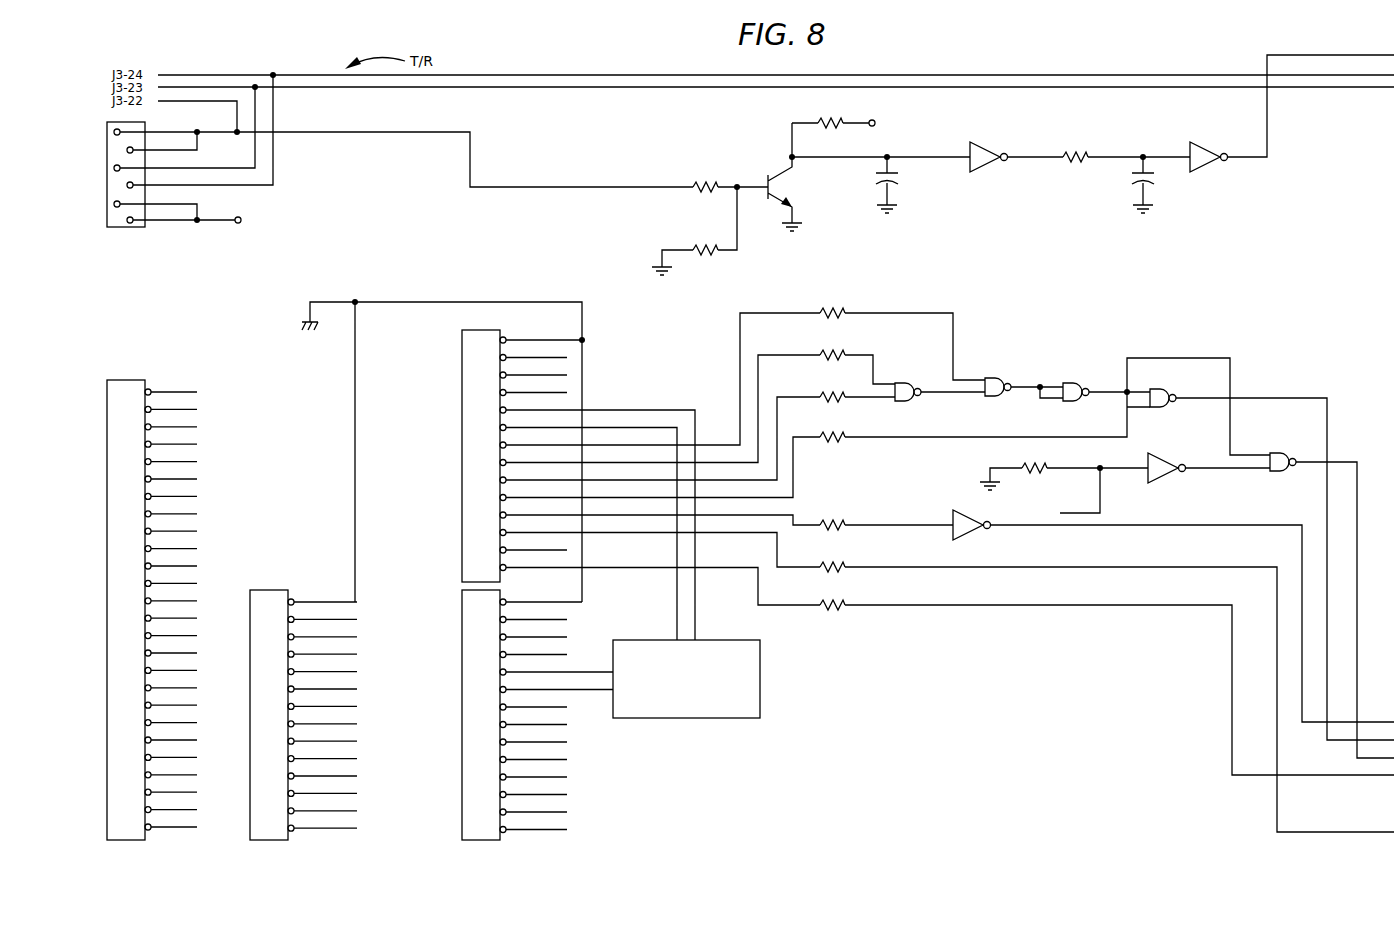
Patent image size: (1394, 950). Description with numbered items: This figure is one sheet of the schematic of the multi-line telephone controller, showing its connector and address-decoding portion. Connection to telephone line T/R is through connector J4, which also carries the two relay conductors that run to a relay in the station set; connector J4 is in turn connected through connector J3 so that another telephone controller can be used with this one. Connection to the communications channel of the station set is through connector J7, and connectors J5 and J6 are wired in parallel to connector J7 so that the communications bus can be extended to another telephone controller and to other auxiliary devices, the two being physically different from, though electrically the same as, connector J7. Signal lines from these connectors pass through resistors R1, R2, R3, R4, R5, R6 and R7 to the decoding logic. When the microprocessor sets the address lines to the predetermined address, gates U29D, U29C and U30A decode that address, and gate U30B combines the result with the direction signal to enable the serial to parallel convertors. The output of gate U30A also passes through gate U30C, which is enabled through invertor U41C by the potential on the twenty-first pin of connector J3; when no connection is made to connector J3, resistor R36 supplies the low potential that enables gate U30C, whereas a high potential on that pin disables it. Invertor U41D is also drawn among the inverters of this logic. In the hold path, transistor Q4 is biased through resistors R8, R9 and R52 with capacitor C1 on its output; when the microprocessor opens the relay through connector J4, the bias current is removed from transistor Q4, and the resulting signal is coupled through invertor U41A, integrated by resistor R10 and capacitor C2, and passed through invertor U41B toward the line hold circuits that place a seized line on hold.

The connector J3 is at (111, 405).
The connector J4 is at (111, 144).
The connector J5 is at (466, 354).
The connector J6 is at (466, 616).
The connector J7 is at (254, 616).
The transistor Q4 is at (813, 177).
The resistor R1 is at (902, 335).
The resistor R2 is at (1045, 410).
The resistor R3 is at (857, 359).
The resistor R4 is at (857, 395).
The resistor R5 is at (886, 517).
The resistor R6 is at (1107, 688).
The resistor R7 is at (1107, 679).
The resistor R8 is at (730, 186).
The resistor R9 is at (838, 122).
The resistor R10 is at (1126, 158).
The resistor R36 is at (1064, 482).
The resistor R52 is at (694, 233).
The capacitor C1 is at (898, 185).
The capacitor C2 is at (1153, 190).
The gate U29C is at (1013, 387).
The gate U29D is at (936, 393).
The gate U30A is at (1095, 391).
The gate U30B is at (1269, 554).
The gate U30C is at (1320, 594).
The invertor U41A is at (1002, 153).
The invertor U41B is at (1228, 153).
The invertor U41C is at (1202, 468).
The invertor U41D is at (1156, 606).